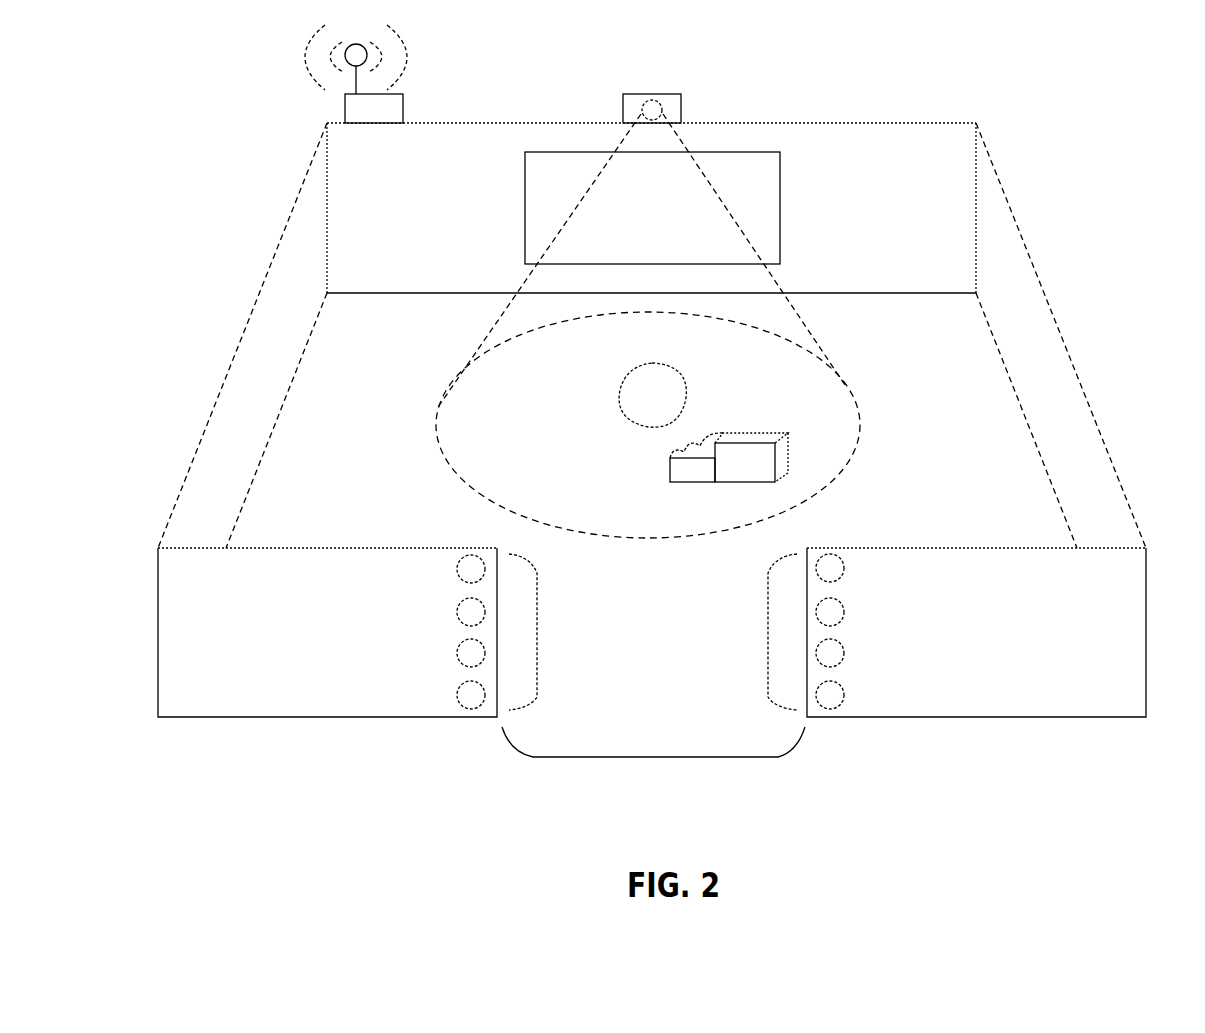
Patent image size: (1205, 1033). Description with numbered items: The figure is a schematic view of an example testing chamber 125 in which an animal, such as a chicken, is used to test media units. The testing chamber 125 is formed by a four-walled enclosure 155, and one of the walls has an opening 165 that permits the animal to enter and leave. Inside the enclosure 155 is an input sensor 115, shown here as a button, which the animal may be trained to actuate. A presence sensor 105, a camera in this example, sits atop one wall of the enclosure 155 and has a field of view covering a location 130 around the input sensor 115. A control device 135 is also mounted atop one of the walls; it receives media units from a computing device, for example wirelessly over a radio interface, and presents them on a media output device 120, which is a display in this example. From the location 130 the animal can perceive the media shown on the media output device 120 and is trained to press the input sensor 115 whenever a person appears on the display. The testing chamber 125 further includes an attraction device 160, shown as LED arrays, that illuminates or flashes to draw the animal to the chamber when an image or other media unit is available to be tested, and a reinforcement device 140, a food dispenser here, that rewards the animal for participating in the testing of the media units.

The presence sensor 105 is at (623, 112).
The input sensor 115 is at (621, 386).
The media output device 120 is at (525, 200).
The testing chamber 125 is at (950, 65).
The location 130 is at (825, 422).
The control device 135 is at (403, 110).
The reinforcement device 140 is at (770, 482).
The four-walled enclosure 155 is at (307, 181).
The attraction device 160 is at (537, 634).
The opening 165 is at (654, 757).